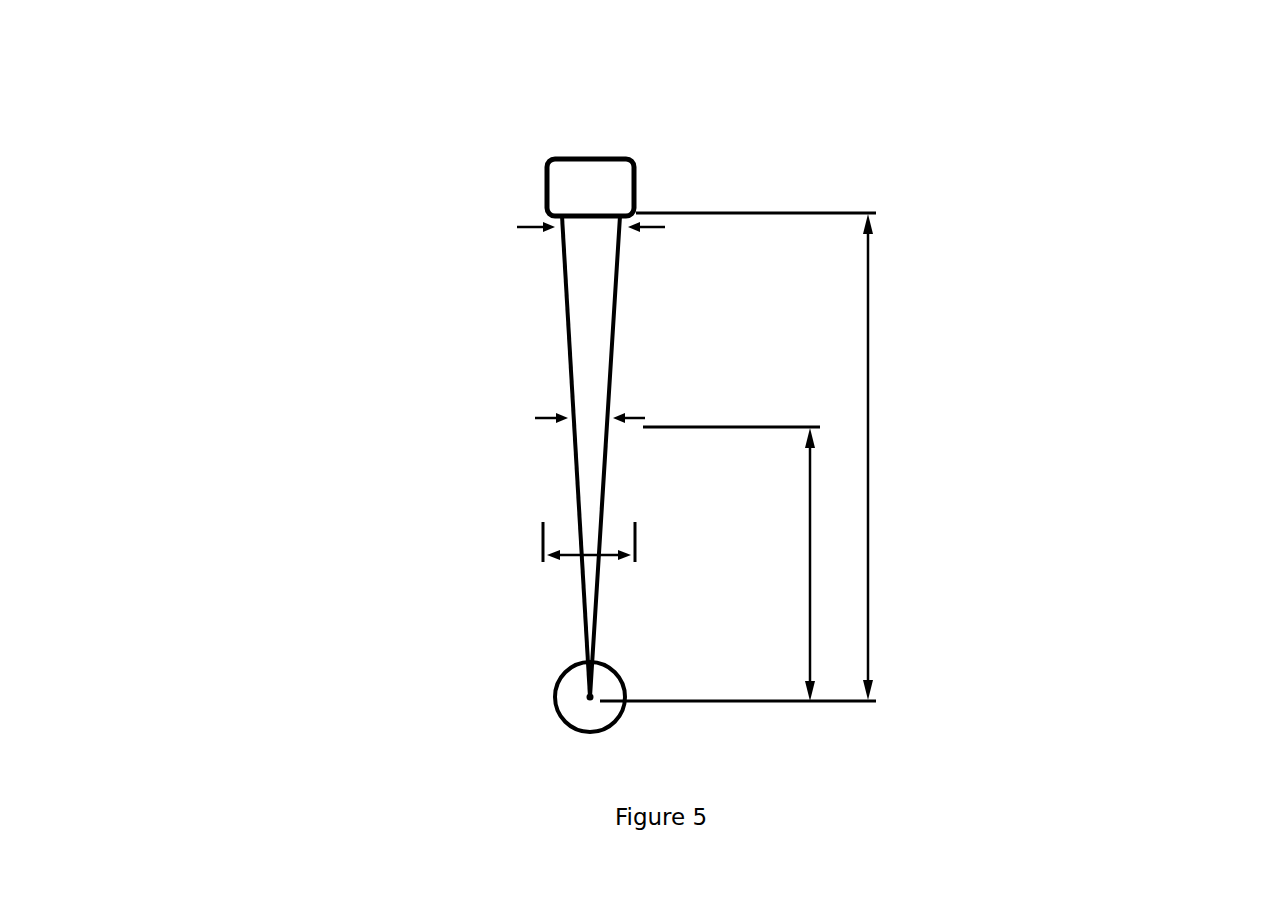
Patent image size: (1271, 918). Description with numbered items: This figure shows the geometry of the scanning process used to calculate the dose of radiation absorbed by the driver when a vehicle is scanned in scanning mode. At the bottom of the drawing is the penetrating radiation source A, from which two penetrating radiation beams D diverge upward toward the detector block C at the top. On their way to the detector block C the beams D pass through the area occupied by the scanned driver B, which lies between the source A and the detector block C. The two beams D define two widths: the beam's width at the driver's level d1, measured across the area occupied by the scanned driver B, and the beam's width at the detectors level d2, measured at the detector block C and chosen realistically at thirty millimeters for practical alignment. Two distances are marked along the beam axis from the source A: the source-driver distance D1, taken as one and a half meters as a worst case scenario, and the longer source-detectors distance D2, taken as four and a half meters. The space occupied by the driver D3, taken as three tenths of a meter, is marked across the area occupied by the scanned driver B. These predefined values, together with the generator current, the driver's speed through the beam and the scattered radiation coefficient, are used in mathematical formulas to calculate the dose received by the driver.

The penetrating radiation source A is at (572, 716).
The area occupied by the scanned driver B is at (555, 502).
The detector block C is at (565, 195).
The penetrating radiation beams D is at (572, 605).
The beam's width at the driver's level d1 is at (590, 419).
The beam's width at the detectors level d2 is at (591, 231).
The source-driver distance D1 is at (731, 564).
The source-detectors distance D2 is at (738, 457).
The space occupied by the driver D3 is at (589, 551).